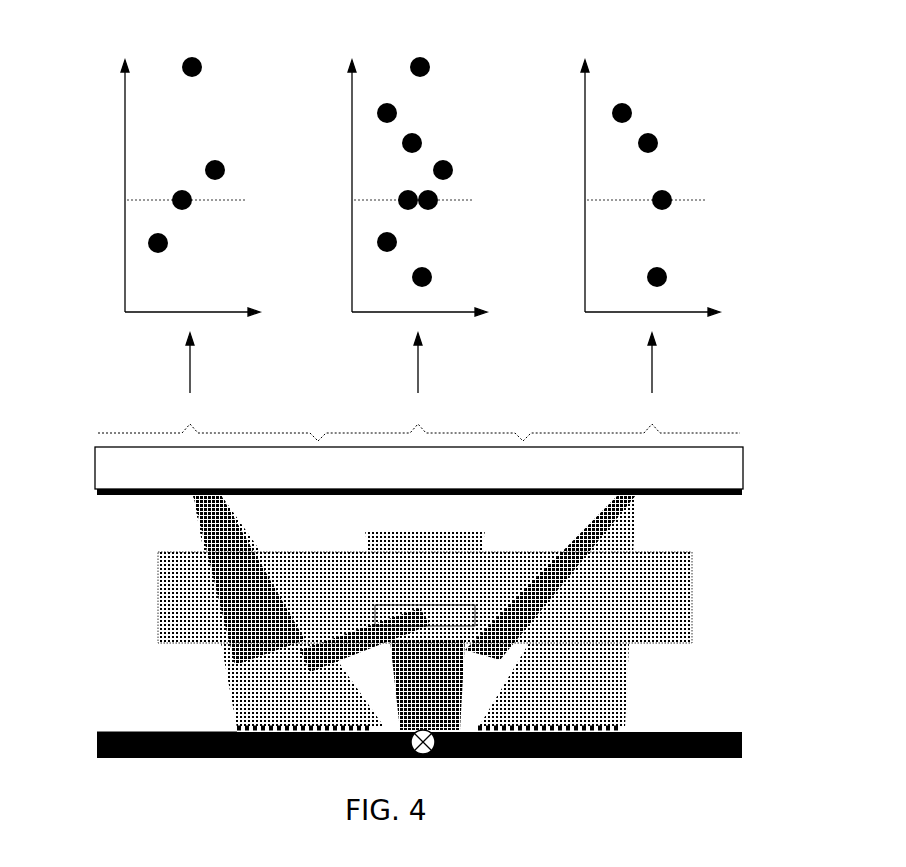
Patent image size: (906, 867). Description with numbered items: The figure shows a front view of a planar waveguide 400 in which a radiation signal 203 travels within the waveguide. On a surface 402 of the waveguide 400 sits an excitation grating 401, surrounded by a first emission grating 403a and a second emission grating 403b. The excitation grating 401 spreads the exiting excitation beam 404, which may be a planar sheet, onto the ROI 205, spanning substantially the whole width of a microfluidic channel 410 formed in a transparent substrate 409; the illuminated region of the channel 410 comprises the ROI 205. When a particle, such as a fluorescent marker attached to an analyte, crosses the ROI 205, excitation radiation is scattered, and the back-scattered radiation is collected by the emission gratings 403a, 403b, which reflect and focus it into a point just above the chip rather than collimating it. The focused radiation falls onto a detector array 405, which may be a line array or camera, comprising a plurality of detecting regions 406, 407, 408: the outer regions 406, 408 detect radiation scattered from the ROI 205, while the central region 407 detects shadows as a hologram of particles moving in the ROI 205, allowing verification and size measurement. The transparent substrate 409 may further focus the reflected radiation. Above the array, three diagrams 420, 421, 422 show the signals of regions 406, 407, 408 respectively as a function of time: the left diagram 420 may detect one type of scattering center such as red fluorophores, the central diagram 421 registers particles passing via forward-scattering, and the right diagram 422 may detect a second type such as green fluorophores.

The left diagram 420 is at (132, 52).
The central diagram 421 is at (359, 52).
The right diagram 422 is at (587, 52).
The detecting region 406 is at (217, 483).
The detecting region 407 is at (453, 483).
The detecting region 408 is at (652, 483).
The detector array 405 is at (145, 495).
The transparent substrate 409 is at (692, 565).
The ROI 205 is at (447, 590).
The microfluidic channel 410 is at (363, 616).
The excitation beam 404 is at (478, 662).
The excitation grating 401 is at (462, 723).
The surface 402 is at (122, 732).
The first emission grating 403a is at (230, 728).
The second emission grating 403b is at (620, 728).
The planar waveguide 400 is at (97, 745).
The radiation signal 203 is at (440, 743).